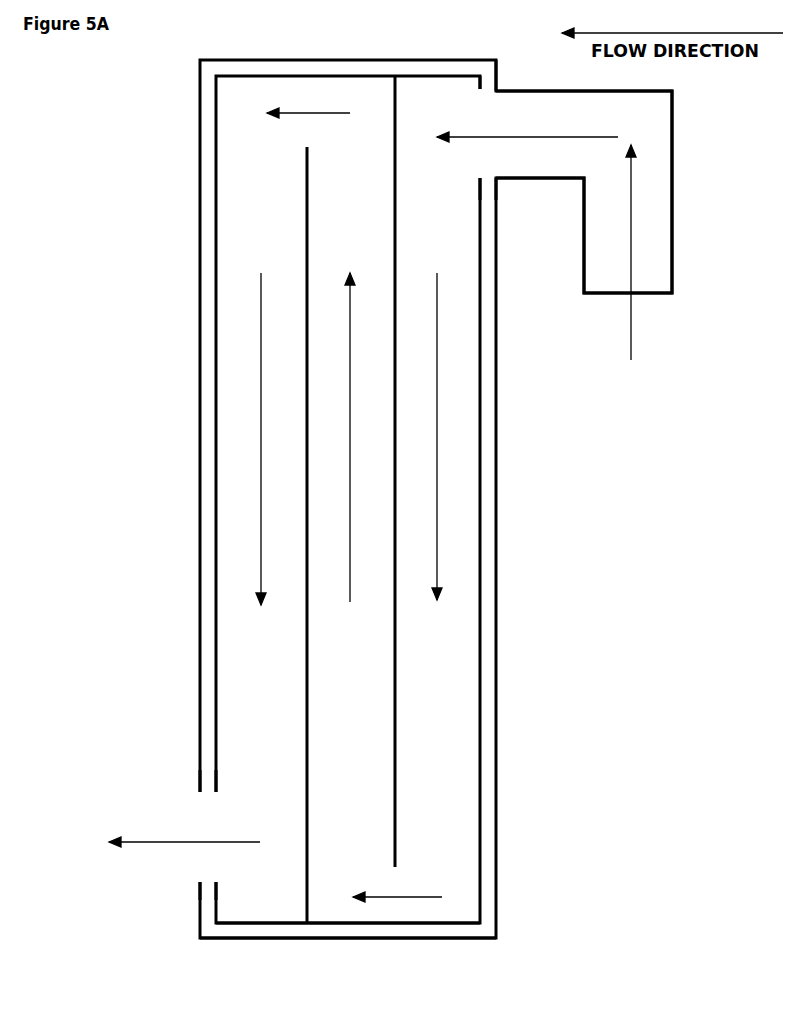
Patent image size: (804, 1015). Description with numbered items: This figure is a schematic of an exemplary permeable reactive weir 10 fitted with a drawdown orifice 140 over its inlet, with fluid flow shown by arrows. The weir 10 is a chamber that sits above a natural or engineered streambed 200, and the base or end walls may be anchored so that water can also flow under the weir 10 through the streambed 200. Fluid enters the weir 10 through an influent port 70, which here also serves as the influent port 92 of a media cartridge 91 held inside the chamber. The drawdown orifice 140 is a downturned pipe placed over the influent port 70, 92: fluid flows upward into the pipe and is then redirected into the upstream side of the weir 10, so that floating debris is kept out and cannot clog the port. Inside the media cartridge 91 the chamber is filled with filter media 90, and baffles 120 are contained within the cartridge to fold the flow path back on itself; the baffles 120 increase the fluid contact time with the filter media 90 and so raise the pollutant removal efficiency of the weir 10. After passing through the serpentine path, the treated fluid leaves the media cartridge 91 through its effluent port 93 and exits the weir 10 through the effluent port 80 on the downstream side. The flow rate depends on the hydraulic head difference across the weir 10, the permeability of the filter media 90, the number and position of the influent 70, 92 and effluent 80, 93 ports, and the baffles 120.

The permeable reactive weir 10 is at (198, 105).
The media cartridge 91 is at (213, 378).
The baffles 120 is at (297, 217).
The filter media 90 is at (430, 762).
The drawdown orifice 140 is at (676, 250).
The influent port 70 is at (527, 152).
The influent port 92 is at (480, 146).
The effluent port 80 is at (171, 828).
The effluent port 93 is at (207, 821).
The engineered streambed 200 is at (348, 951).